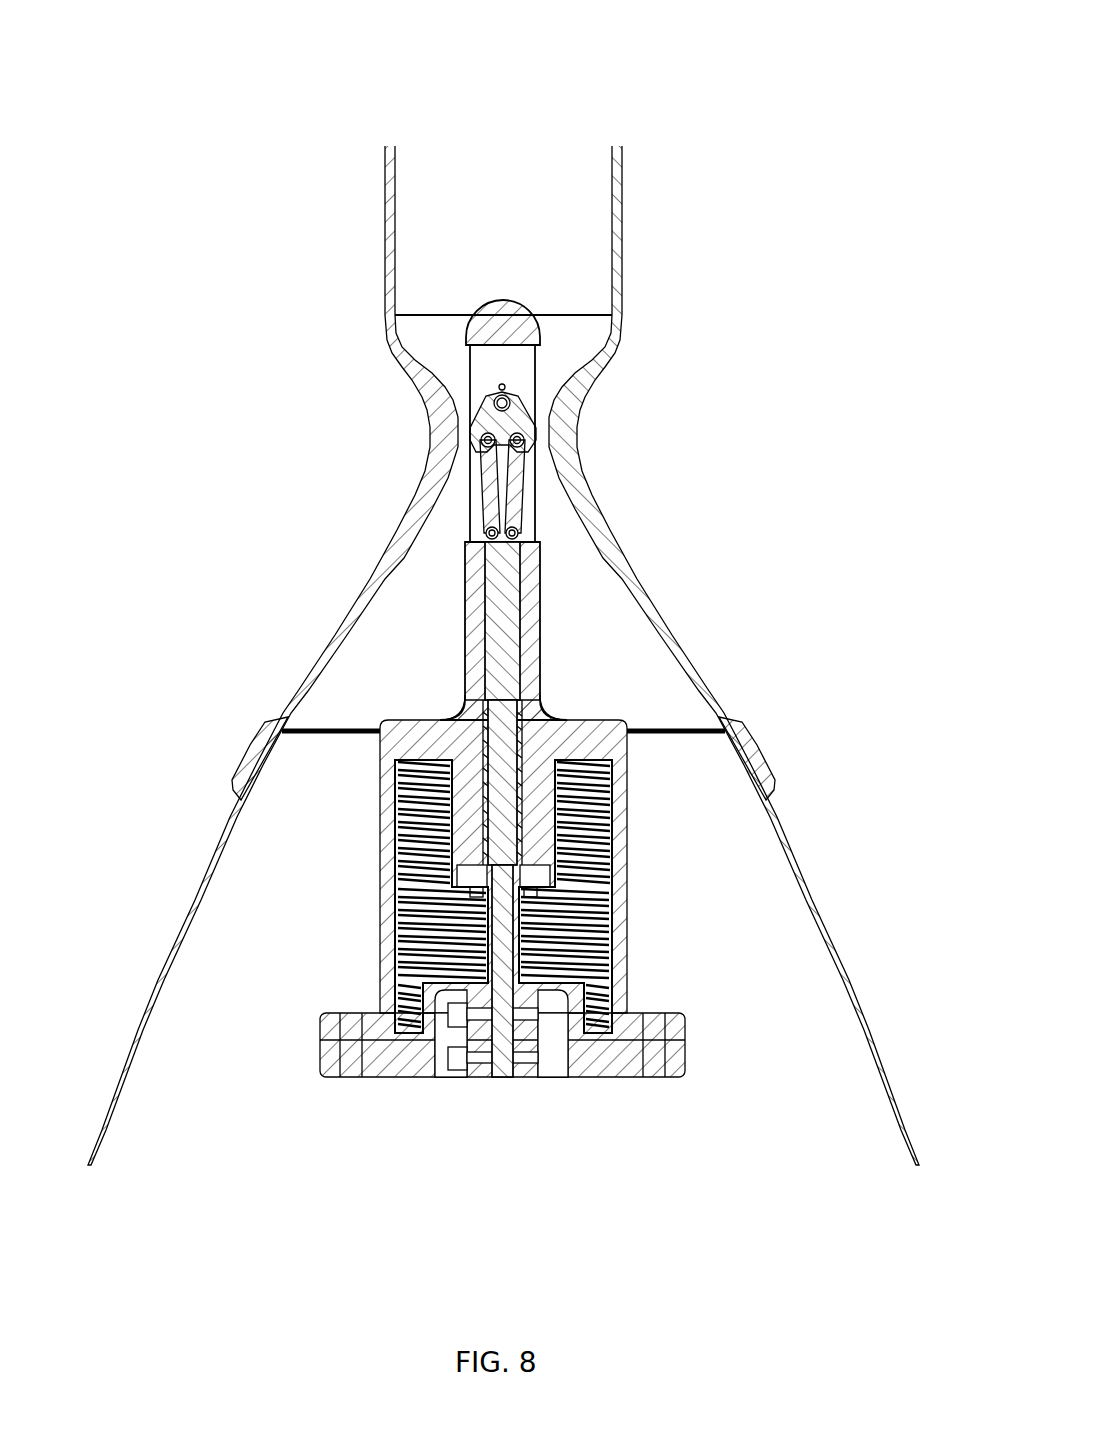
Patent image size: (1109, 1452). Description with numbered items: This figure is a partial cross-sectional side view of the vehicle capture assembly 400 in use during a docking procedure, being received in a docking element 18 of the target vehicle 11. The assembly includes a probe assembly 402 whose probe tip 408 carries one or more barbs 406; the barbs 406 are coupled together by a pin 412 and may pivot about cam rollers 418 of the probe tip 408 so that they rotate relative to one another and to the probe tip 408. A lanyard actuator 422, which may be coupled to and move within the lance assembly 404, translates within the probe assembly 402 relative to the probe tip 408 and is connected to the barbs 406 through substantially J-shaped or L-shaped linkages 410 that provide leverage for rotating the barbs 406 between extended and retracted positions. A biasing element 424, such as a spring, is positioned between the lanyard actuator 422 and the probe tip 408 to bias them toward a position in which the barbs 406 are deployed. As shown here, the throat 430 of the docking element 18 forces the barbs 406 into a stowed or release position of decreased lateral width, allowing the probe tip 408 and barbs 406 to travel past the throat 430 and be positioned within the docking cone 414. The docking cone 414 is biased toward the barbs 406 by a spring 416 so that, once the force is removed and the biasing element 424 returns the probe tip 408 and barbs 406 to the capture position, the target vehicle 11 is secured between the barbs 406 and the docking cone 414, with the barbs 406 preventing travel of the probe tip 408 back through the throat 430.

The target vehicle 11 is at (652, 55).
The docking element 18 is at (385, 165).
The vehicle capture assembly 400 is at (352, 360).
The probe assembly 402 is at (672, 440).
The lance assembly 404 is at (380, 648).
The barbs 406 is at (475, 434).
The probe tip 408 is at (470, 322).
The linkages 410 is at (486, 482).
The pin 412 is at (510, 403).
The docking cone 414 is at (405, 740).
The spring 416 is at (400, 790).
The cam rollers 418 is at (506, 386).
The lanyard actuator 422 is at (506, 560).
The biasing element 424 is at (487, 722).
The throat 430 is at (442, 433).